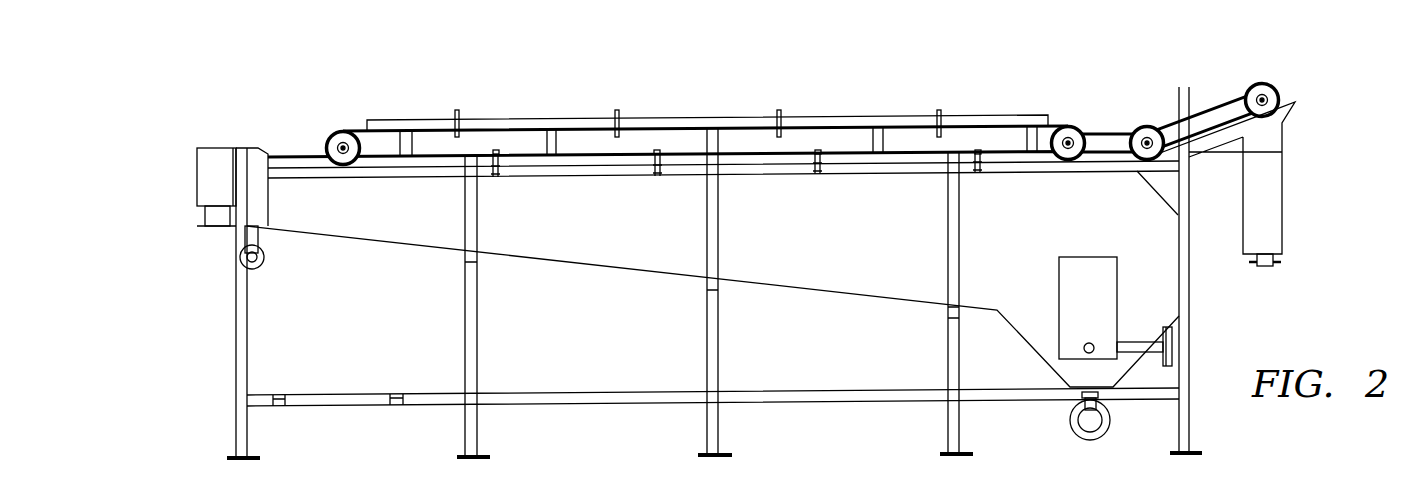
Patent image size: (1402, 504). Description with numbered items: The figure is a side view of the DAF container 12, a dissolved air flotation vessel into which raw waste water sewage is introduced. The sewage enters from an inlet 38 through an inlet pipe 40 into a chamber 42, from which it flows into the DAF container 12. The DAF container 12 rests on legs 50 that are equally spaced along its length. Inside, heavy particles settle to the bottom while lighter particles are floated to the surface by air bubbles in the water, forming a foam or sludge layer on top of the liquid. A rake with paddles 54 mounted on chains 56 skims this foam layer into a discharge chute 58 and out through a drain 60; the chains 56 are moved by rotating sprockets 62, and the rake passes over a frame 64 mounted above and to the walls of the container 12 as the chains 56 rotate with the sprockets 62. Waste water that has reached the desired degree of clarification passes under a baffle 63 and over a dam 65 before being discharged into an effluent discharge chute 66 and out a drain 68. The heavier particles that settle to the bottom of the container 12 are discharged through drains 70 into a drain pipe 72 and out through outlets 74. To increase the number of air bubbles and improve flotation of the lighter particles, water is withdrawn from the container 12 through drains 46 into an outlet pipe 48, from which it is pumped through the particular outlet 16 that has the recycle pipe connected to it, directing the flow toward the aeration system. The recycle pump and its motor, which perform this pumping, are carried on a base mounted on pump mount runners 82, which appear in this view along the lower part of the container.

The DAF container 12 is at (884, 70).
The outlet 16 is at (265, 258).
The inlet 38 is at (1173, 343).
The inlet pipe 40 is at (1084, 346).
The chamber 42 is at (1075, 309).
The drains 46 is at (240, 238).
The outlet pipe 48 is at (256, 270).
The legs 50 is at (247, 436).
The paddles 54 is at (496, 150).
The chains 56 is at (365, 127).
The discharge chute 58 is at (1251, 209).
The drain 60 is at (1274, 268).
The sprockets 62 is at (334, 131).
The baffle 63 is at (270, 196).
The frame 64 is at (708, 118).
The dam 65 is at (232, 166).
The effluent discharge chute 66 is at (197, 173).
The drain 68 is at (200, 226).
The drains 70 is at (1100, 403).
The drain pipe 72 is at (1097, 427).
The outlets 74 is at (1077, 432).
The pump mount runners 82 is at (280, 394).